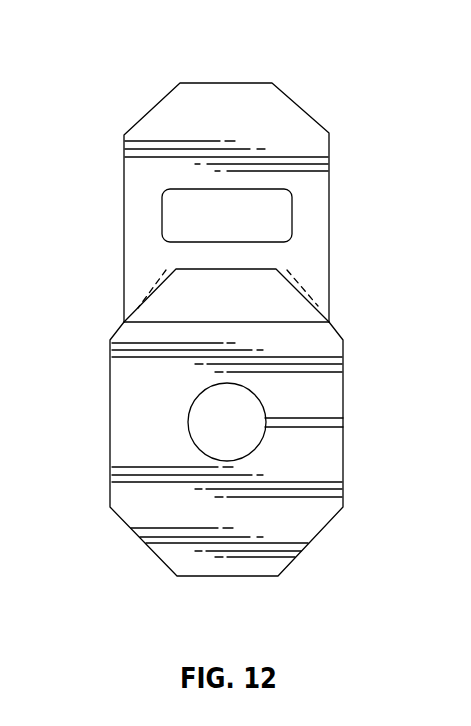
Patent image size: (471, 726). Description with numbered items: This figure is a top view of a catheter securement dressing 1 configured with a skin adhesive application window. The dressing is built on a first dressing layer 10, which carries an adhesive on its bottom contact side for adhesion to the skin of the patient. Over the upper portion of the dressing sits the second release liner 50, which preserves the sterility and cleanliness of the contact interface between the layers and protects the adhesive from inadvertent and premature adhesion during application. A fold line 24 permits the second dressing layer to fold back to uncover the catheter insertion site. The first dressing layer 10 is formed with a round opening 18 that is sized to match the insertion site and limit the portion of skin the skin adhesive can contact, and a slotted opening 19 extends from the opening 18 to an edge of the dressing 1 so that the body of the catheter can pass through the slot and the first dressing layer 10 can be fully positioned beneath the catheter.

The catheter securement dressing 1 is at (98, 47).
The second release liner 50 is at (282, 107).
The fold line 24 is at (317, 308).
The first dressing layer 10 is at (302, 534).
The opening 18 is at (202, 422).
The slotted opening 19 is at (322, 419).